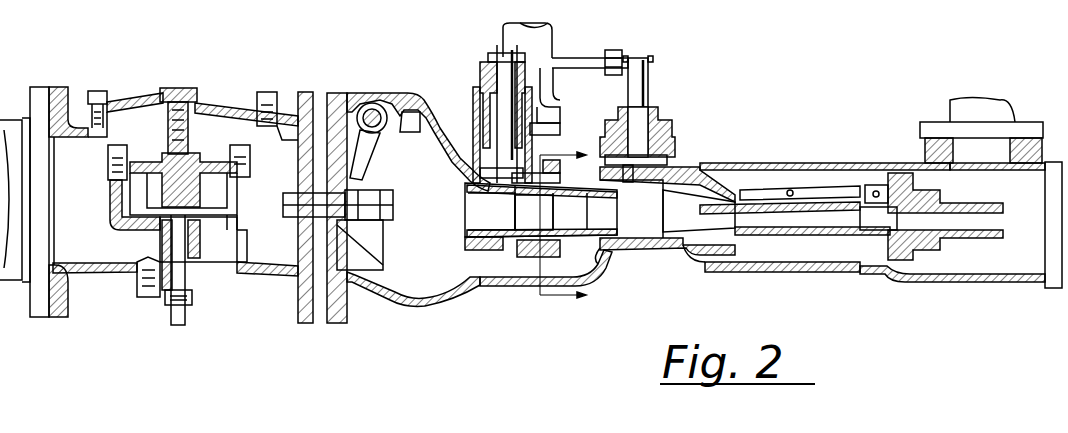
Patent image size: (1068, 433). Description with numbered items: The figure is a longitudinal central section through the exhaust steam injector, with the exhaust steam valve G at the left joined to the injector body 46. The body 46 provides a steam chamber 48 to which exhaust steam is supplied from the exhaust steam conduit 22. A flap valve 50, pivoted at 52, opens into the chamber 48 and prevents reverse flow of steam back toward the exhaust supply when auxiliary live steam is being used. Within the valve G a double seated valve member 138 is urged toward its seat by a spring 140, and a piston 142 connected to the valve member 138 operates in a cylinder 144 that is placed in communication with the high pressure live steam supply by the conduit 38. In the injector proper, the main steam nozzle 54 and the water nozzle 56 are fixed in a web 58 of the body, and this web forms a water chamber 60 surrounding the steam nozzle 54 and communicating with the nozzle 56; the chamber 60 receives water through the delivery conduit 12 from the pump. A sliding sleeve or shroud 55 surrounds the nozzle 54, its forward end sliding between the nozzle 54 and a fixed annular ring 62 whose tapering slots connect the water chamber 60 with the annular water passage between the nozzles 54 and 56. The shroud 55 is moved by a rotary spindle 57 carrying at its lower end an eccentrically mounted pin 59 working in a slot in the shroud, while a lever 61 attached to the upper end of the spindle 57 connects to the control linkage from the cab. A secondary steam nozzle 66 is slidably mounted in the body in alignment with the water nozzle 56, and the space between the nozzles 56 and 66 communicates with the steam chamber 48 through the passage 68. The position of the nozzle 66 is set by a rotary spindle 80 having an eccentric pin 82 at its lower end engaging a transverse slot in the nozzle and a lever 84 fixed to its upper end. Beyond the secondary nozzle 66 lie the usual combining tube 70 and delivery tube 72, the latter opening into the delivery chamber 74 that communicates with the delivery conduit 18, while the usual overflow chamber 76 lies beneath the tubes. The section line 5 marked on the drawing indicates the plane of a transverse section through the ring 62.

The exhaust steam conduit 22 is at (12, 128).
The exhaust steam valve G is at (66, 87).
The spring 140 is at (184, 94).
The double seated valve member 138 is at (210, 190).
The cylinder 144 is at (212, 238).
The piston 142 is at (192, 300).
The conduit 38 is at (171, 331).
The injector body 46 is at (425, 93).
The pivot 52 is at (384, 104).
The flap valve 50 is at (372, 250).
The steam chamber 48 is at (424, 288).
The main steam nozzle 54 is at (470, 200).
The eccentrically mounted pin 59 is at (515, 198).
The sliding sleeve or shroud 55 is at (522, 240).
The web 58 is at (482, 250).
The water chamber 60 is at (528, 258).
The passage 68 is at (530, 287).
The water nozzle 56 is at (603, 258).
The rotary spindle 57 is at (480, 80).
The lever 61 is at (492, 52).
The delivery conduit 12 is at (546, 40).
The fixed annular ring 62 is at (552, 160).
The section line 5- 5 is at (569, 226).
The lever 84 is at (650, 57).
The rotary spindle 80 is at (648, 90).
The eccentric pin 82 is at (638, 196).
The secondary steam nozzle 66 is at (647, 255).
The combining tube 70 is at (722, 180).
The overflow chamber 76 is at (781, 268).
The delivery conduit 18 is at (948, 110).
The delivery tube 72 is at (1006, 206).
The delivery chamber 74 is at (979, 282).